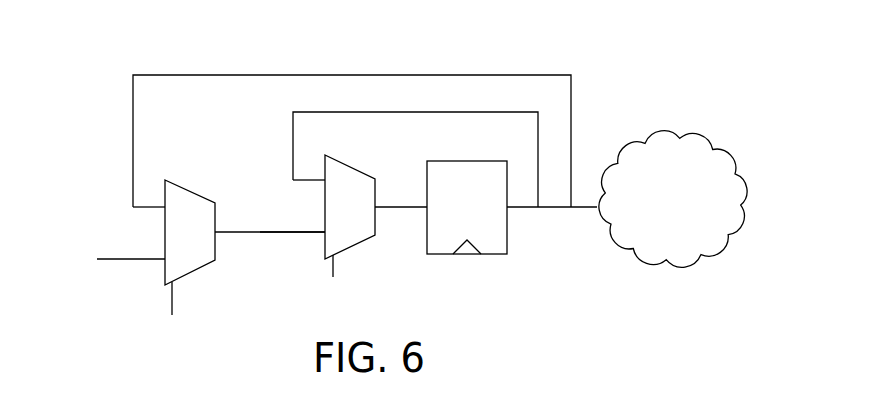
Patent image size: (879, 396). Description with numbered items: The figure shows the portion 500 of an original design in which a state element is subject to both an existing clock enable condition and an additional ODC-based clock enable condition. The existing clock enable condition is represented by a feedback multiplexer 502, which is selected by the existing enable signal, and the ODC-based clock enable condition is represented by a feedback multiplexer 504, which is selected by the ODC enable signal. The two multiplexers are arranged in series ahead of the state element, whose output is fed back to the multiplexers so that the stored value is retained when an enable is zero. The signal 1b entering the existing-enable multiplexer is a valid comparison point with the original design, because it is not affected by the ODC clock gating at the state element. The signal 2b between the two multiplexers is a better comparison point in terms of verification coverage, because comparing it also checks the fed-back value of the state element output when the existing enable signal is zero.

The portion of original design 500 is at (127, 38).
The feedback multiplexer 502 is at (368, 217).
The feedback multiplexer 504 is at (208, 243).
The signal 1b is at (133, 258).
The signal 2b is at (293, 232).